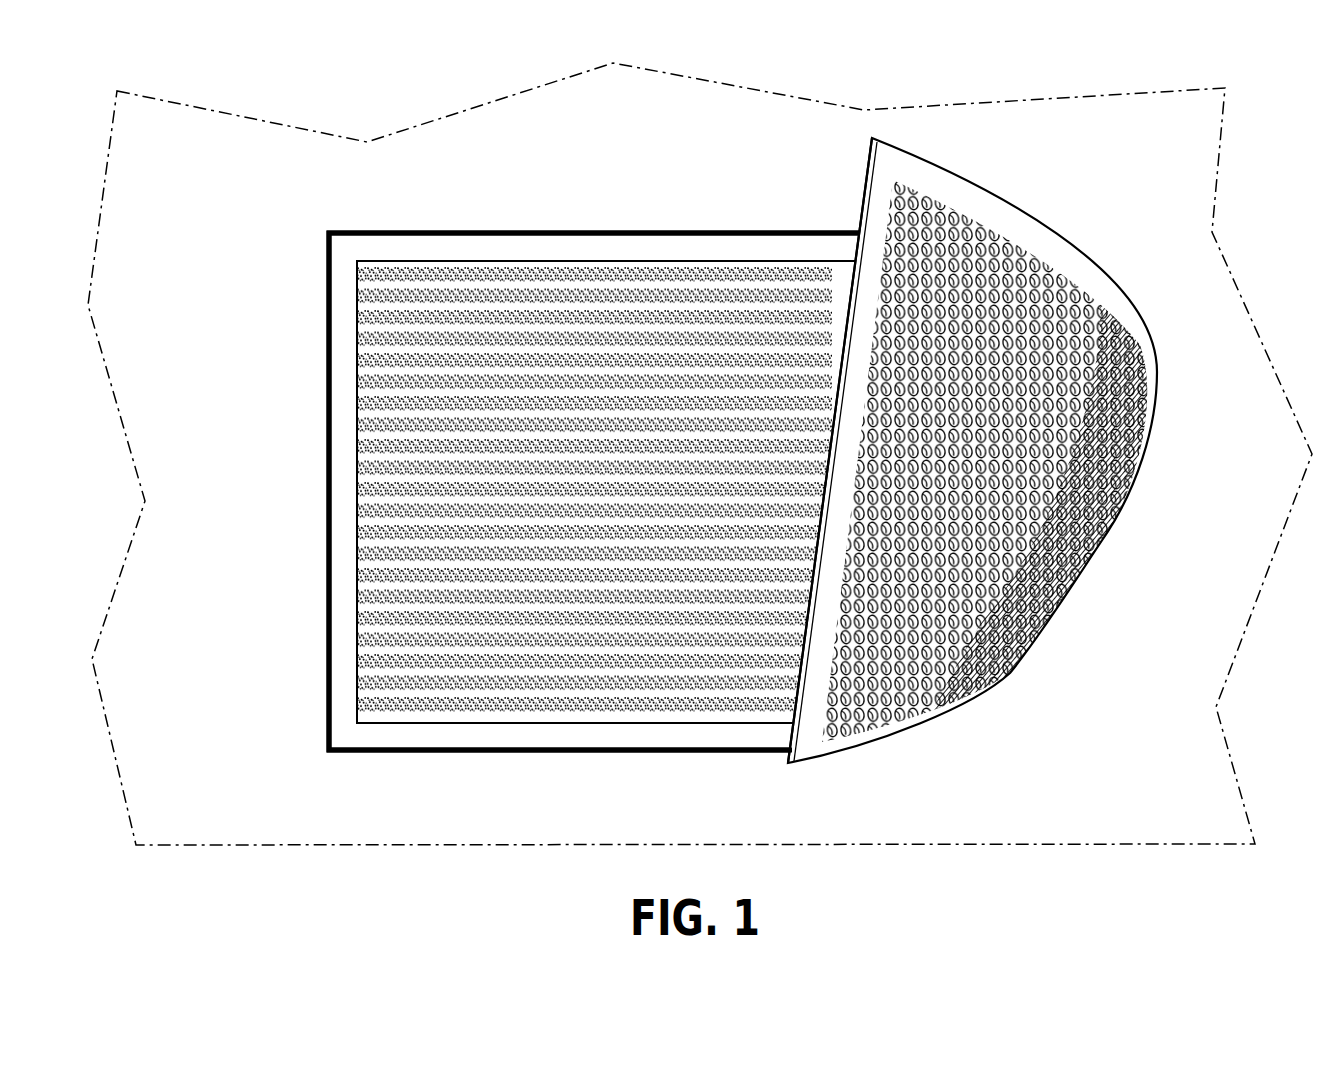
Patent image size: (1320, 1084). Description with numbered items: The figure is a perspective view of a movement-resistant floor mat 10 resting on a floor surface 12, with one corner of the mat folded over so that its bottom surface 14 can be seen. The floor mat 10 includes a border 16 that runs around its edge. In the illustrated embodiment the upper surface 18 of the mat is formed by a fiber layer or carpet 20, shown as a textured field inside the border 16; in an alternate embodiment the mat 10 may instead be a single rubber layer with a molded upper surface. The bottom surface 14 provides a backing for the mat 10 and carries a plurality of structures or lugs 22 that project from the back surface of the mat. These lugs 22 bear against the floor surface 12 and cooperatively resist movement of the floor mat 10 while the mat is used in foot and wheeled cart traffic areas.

The movement-resistant floor mat 10 is at (600, 750).
The floor surface 12 is at (508, 179).
The bottom surface 14 is at (979, 450).
The border 16 is at (478, 247).
The upper surface 18 is at (403, 297).
The fiber layer or carpet 20 is at (596, 336).
The lugs 22 is at (991, 221).